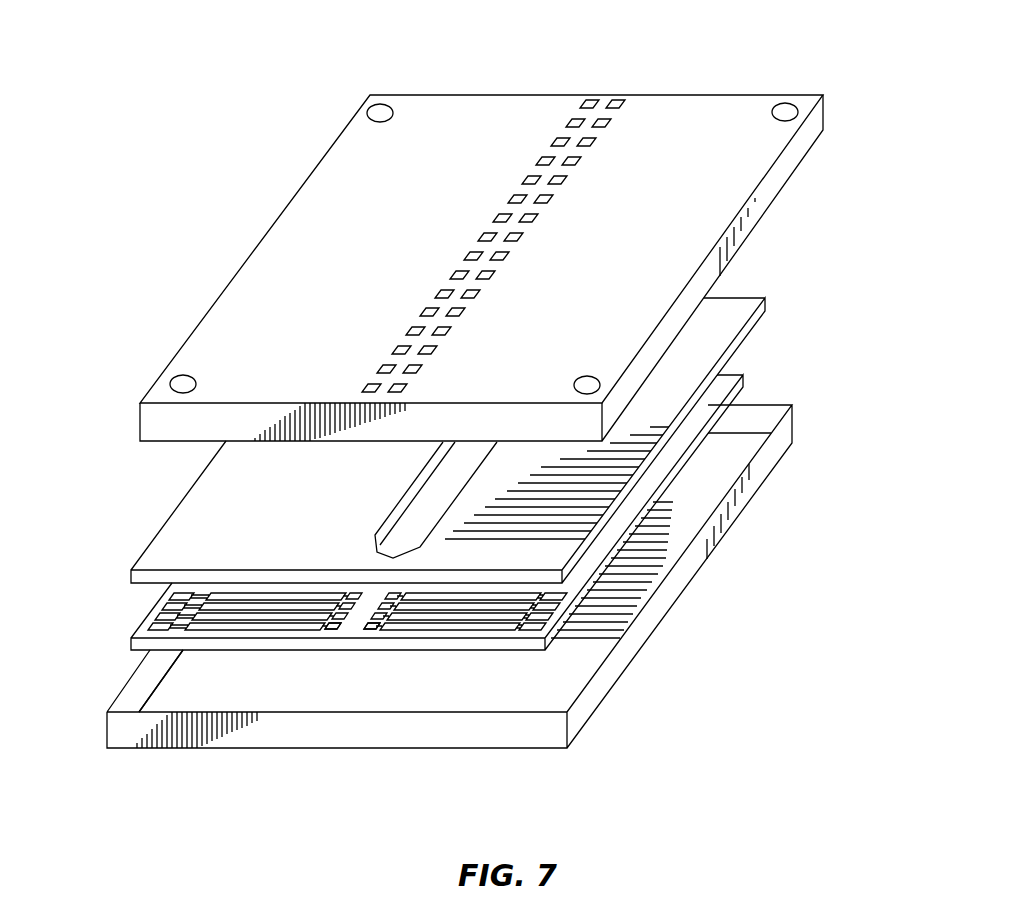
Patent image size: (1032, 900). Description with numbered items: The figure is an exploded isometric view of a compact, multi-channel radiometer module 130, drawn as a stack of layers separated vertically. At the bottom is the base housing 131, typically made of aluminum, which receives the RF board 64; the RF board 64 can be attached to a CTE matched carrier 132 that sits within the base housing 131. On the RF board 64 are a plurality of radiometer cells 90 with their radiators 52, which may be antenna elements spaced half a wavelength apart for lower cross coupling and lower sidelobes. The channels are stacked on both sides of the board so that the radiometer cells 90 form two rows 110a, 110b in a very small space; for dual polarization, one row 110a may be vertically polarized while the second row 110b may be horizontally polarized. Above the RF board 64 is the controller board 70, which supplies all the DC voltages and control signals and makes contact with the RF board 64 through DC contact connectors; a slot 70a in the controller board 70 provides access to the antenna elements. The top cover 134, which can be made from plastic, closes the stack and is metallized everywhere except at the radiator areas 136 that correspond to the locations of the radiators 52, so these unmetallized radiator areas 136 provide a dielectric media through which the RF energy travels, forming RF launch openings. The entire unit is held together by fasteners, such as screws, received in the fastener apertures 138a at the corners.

The multi-channel radiometer module 130 is at (524, 71).
The top cover 134 is at (747, 157).
The radiator areas 136 is at (540, 197).
The fastener apertures 138a is at (381, 113).
The controller board 70 is at (722, 318).
The slot 70a is at (418, 511).
The RF board 64 is at (715, 392).
The first row of radiometer cells 110a is at (468, 627).
The second row of radiometer cells 110b is at (208, 633).
The radiometer cells 90 is at (267, 628).
The radiators 52 is at (370, 627).
The base housing 131 is at (642, 631).
The CTE matched carrier 132 is at (720, 412).